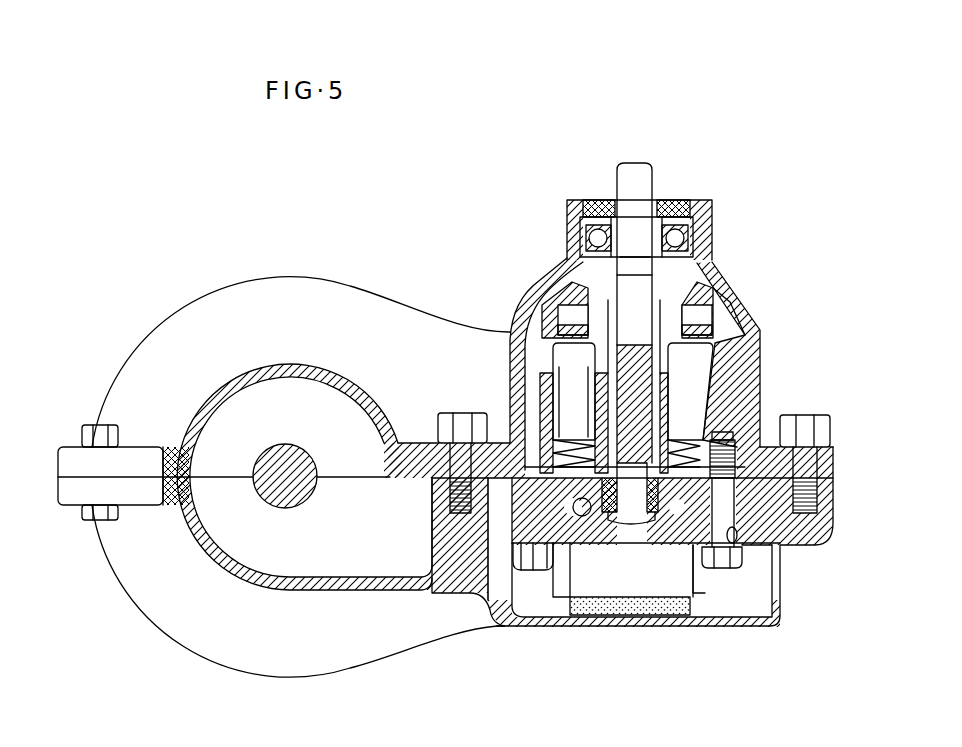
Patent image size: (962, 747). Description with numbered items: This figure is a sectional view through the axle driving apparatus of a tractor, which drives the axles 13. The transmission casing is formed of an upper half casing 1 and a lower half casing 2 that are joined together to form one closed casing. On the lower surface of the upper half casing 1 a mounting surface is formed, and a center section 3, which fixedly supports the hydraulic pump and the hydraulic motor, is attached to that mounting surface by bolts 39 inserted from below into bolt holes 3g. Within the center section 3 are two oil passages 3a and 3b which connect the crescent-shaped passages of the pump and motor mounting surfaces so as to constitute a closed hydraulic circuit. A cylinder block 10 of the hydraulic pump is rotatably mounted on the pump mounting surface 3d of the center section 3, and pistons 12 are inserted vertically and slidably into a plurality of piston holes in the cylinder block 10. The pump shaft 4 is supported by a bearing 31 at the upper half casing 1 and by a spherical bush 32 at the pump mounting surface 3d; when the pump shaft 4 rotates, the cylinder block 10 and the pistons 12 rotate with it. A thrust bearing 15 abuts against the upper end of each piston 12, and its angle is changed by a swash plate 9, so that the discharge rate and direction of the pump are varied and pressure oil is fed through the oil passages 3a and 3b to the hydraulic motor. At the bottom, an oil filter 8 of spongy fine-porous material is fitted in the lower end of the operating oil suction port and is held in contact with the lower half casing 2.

The upper half casing 1 is at (756, 377).
The lower half casing 2 is at (833, 503).
The center section 3 is at (460, 583).
The oil passage 3a is at (538, 568).
The oil passage 3b is at (712, 572).
The pump mounting surface 3d is at (512, 428).
The bolt hole 3g is at (740, 550).
The pump shaft 4 is at (657, 182).
The oil filter 8 is at (602, 612).
The swash plate 9 is at (705, 288).
The cylinder block 10 is at (512, 386).
The piston 12 is at (582, 402).
The axle 13 is at (297, 509).
The thrust bearing 15 is at (730, 302).
The bearing 31 is at (683, 237).
The spherical bush 32 is at (580, 516).
The bolt 39 is at (490, 533).